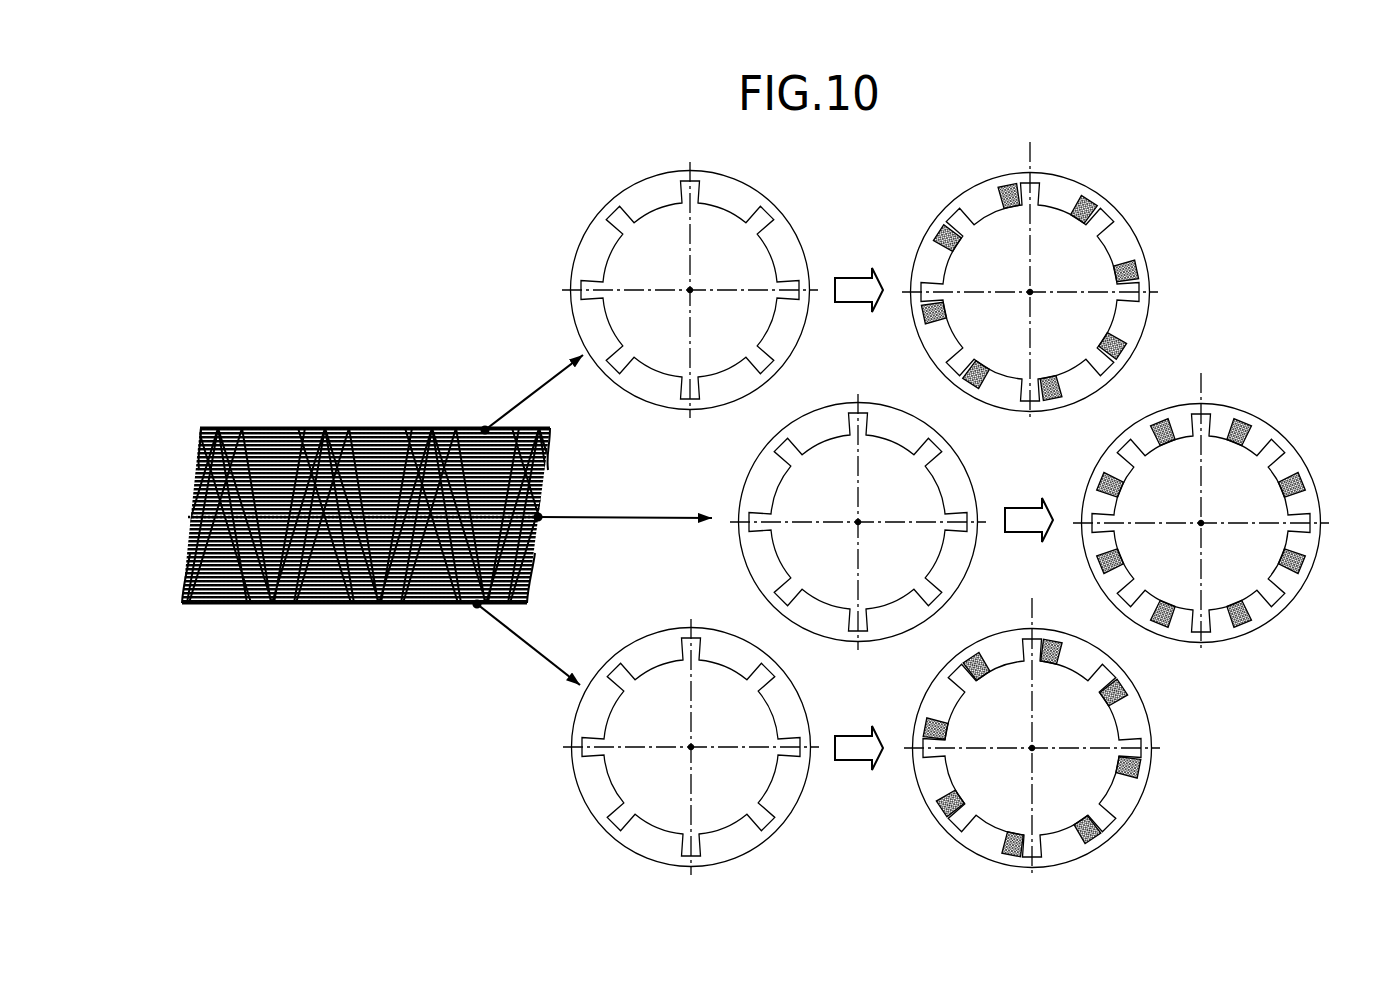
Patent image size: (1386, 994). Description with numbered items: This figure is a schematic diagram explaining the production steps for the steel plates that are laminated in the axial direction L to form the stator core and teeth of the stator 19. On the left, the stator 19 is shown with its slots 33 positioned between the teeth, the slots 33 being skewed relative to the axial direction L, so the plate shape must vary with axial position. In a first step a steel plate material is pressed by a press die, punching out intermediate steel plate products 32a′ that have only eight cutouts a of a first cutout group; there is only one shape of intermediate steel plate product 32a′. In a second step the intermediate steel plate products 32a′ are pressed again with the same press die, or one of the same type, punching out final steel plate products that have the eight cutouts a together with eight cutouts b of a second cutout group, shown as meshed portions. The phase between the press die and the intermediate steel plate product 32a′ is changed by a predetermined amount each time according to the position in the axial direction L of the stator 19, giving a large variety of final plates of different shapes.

The stator 19 is at (262, 416).
The slots 33 is at (347, 428).
The intermediate steel plate product 32a′ is at (590, 212).
The cutouts of the first cutout group a is at (947, 520).
The cutouts of the second cutout group b is at (1119, 520).
The axial direction L is at (931, 537).